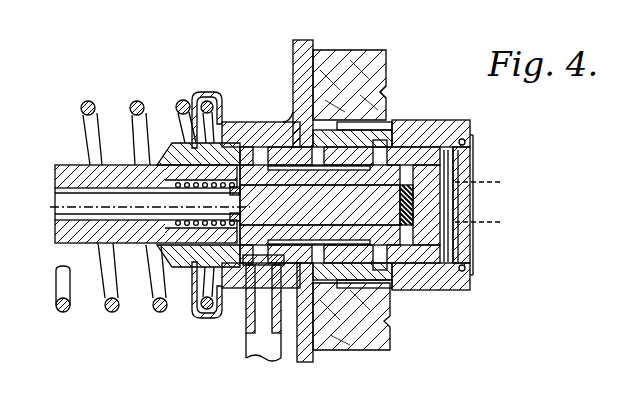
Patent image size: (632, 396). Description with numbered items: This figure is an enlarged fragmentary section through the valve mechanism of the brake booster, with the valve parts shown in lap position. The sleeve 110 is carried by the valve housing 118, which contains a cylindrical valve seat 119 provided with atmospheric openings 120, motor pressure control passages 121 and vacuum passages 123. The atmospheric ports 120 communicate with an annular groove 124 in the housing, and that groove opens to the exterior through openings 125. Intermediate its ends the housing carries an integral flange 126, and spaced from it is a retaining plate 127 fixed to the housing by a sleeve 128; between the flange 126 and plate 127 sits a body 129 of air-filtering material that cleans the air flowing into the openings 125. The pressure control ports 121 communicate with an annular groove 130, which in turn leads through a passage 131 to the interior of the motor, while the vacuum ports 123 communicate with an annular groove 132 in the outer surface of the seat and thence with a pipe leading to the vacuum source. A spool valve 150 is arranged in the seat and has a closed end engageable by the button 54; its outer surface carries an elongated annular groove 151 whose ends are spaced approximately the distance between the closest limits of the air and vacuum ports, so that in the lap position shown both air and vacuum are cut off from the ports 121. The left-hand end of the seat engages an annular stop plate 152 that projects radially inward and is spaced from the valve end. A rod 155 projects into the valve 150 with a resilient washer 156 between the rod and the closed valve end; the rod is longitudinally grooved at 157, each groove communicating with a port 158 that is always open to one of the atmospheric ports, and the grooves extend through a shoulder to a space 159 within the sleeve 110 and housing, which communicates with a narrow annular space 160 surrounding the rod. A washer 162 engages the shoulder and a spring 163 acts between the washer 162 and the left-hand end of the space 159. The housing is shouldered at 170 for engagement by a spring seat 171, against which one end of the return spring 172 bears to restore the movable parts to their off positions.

The button 54 is at (486, 225).
The sleeve 110 is at (75, 166).
The valve housing 118 is at (249, 122).
The cylindrical valve seat 119 is at (420, 140).
The atmospheric openings 120 is at (405, 132).
The motor pressure control passages 121 is at (325, 186).
The vacuum passages 123 is at (265, 186).
The annular groove 124 is at (415, 283).
The openings 125 is at (392, 304).
The flange 126 is at (293, 46).
The retaining plate 127 is at (386, 68).
The sleeve 128 is at (470, 122).
The body of air-filtering material 129 is at (353, 56).
The annular groove 130 is at (326, 99).
The passage 131 is at (292, 114).
The annular groove / pipe 132 is at (250, 146).
The spool valve 150 is at (458, 161).
The elongated annular groove 151 is at (365, 186).
The annular stop plate 152 is at (186, 146).
The rod 155 is at (300, 186).
The resilient washer 156 is at (456, 203).
The longitudinal grooves 157 is at (398, 186).
The port 158 is at (232, 190).
The space 159 is at (177, 188).
The narrow annular space 160 is at (57, 199).
The washer 162 is at (214, 219).
The spring 163 is at (166, 252).
The shoulder 170 is at (224, 118).
The spring seat 171 is at (205, 92).
The return spring 172 is at (112, 313).